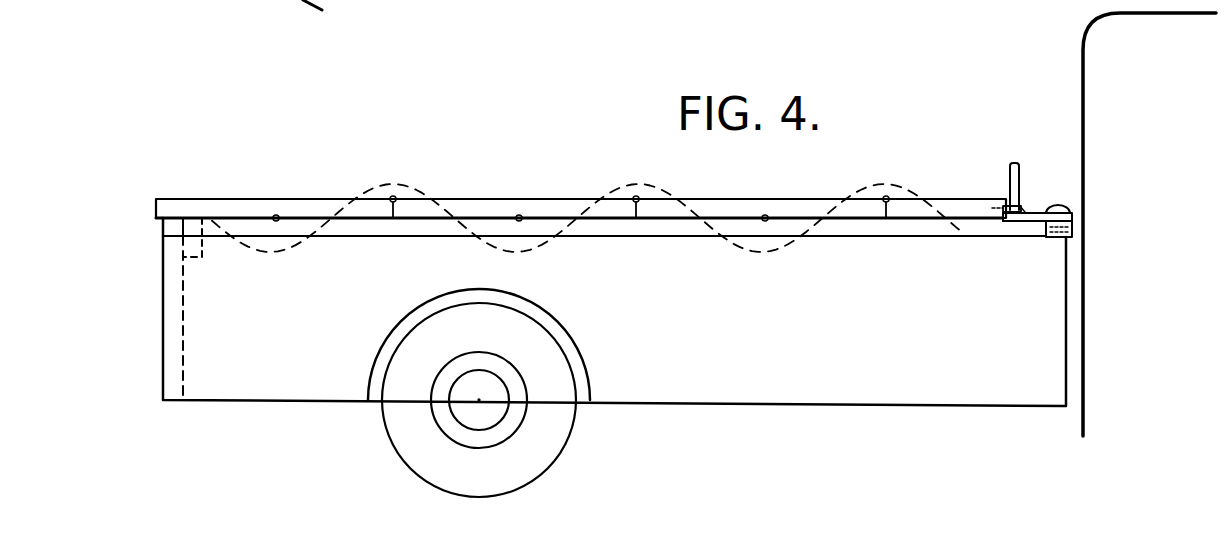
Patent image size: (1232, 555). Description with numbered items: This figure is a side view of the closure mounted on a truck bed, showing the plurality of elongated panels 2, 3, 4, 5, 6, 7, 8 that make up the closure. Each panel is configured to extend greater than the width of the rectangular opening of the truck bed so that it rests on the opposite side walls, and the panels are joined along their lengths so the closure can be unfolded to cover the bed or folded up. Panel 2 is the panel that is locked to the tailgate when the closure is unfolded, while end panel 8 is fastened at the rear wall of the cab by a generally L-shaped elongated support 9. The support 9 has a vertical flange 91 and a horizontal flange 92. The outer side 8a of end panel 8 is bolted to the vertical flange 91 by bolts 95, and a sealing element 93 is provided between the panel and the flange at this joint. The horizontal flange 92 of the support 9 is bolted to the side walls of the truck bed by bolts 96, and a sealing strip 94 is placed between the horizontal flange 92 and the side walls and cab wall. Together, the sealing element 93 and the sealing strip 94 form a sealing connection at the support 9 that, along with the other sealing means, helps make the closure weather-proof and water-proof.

The elongated panel 2 is at (240, 214).
The elongated panel 3 is at (318, 211).
The elongated panel 4 is at (433, 212).
The elongated panel 5 is at (565, 210).
The elongated panel 6 is at (668, 212).
The elongated panel 7 is at (802, 213).
The end panel 8 is at (912, 210).
The outer side of panel 8 8a is at (1011, 224).
The elongated support 9 is at (1066, 188).
The vertical flange 91 is at (1010, 176).
The horizontal flange 92 is at (1032, 221).
The sealing element 93 is at (1006, 206).
The sealing strip 94 is at (1072, 226).
The bolts 95 is at (1021, 211).
The bolts 96 is at (1060, 207).